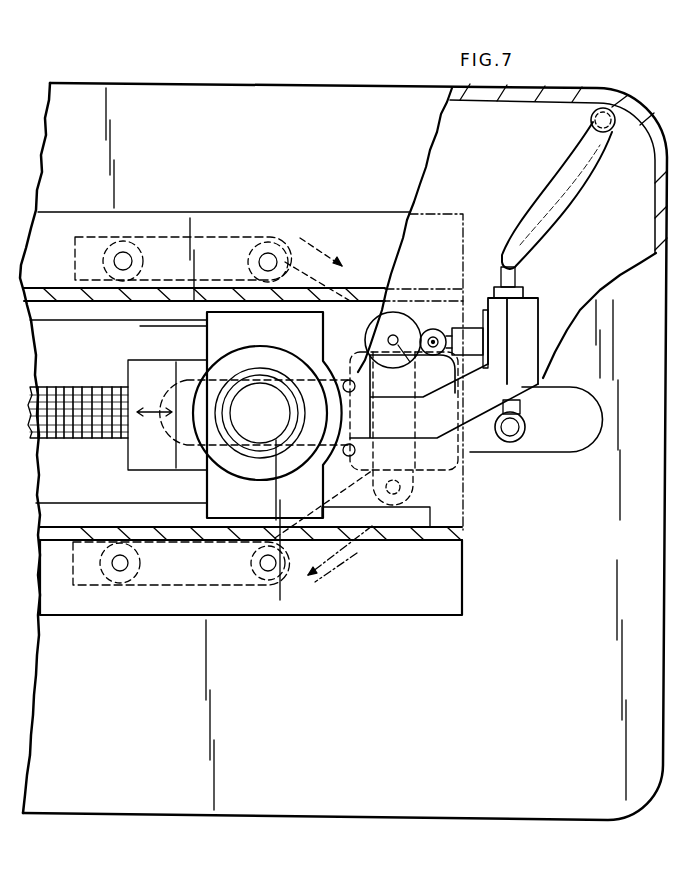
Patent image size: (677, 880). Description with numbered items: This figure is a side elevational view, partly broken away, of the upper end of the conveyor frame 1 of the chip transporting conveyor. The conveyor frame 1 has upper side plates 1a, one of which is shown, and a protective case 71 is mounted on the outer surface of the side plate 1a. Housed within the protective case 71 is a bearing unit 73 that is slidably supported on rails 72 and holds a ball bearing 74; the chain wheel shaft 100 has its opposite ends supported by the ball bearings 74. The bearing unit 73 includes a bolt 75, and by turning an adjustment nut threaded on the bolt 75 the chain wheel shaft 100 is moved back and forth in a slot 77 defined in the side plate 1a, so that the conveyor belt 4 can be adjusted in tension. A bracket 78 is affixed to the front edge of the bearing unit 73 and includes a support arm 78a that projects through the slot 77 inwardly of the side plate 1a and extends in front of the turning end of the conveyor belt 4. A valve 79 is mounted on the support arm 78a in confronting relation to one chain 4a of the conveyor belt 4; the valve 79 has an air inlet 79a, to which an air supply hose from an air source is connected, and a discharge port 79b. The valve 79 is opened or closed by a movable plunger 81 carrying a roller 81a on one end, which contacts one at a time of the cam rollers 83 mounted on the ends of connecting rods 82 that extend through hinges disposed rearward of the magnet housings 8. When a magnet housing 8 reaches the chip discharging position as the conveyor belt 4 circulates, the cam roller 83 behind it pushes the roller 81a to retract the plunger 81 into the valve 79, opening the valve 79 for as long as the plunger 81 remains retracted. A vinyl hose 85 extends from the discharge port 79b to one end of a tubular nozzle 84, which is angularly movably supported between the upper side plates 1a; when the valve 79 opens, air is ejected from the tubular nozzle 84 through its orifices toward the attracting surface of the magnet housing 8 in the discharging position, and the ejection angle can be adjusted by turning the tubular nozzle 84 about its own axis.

The conveyor frame 1 is at (265, 83).
The upper side plate 1a is at (315, 87).
The conveyor belt 4 is at (202, 236).
The chain 4a is at (252, 238).
The magnet housing 8 is at (462, 447).
The protective case 71 is at (400, 545).
The rail 72 is at (150, 328).
The bearing unit 73 is at (123, 351).
The ball bearing 74 is at (252, 478).
The bolt 75 is at (78, 387).
The slot 77 is at (541, 452).
The bracket 78 is at (345, 412).
The support arm 78a is at (493, 422).
The valve 79 is at (488, 310).
The air inlet 79a is at (525, 425).
The discharge port 79b is at (520, 274).
The movable plunger 81 is at (474, 328).
The roller 81a is at (430, 328).
The connecting rod 82 is at (413, 364).
The cam roller 83 is at (390, 312).
The tubular nozzle 84 is at (590, 120).
The hose 85 is at (566, 192).
The chain wheel shaft 100 is at (258, 388).